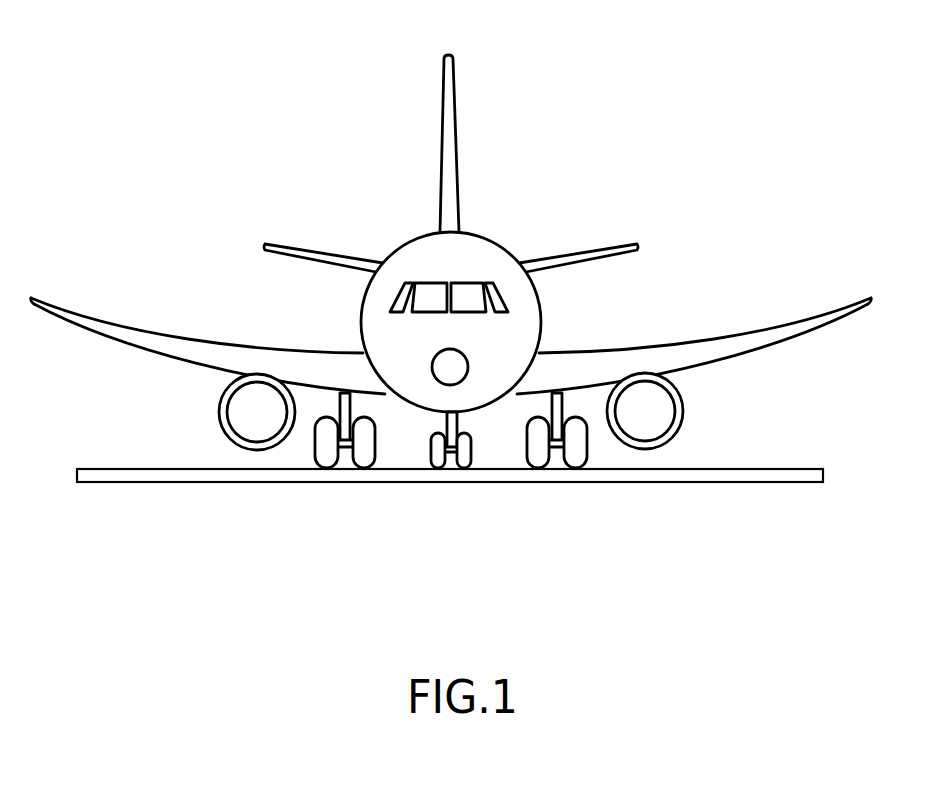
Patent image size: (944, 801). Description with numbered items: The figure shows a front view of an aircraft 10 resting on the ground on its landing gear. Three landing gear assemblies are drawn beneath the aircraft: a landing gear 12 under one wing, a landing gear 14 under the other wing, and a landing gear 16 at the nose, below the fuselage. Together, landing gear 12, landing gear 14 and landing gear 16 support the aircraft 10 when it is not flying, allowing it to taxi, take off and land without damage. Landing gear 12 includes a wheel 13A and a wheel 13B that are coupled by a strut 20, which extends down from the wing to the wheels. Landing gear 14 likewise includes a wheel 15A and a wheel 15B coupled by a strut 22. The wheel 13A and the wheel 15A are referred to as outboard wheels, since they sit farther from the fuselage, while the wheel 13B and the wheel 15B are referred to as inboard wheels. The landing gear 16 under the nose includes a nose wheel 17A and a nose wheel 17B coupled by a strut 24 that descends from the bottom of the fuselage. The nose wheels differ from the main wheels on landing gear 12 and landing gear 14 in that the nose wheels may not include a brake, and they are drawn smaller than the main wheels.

The aircraft 10 is at (292, 148).
The landing gear 12 is at (637, 422).
The wheel 13A is at (588, 455).
The wheel 13B is at (546, 416).
The landing gear 14 is at (263, 495).
The wheel 15A is at (317, 462).
The wheel 15B is at (353, 494).
The landing gear 16 is at (496, 440).
The nose wheel 17A is at (477, 432).
The nose wheel 17B is at (432, 463).
The strut 20 is at (553, 463).
The strut 22 is at (348, 466).
The strut 24 is at (450, 460).